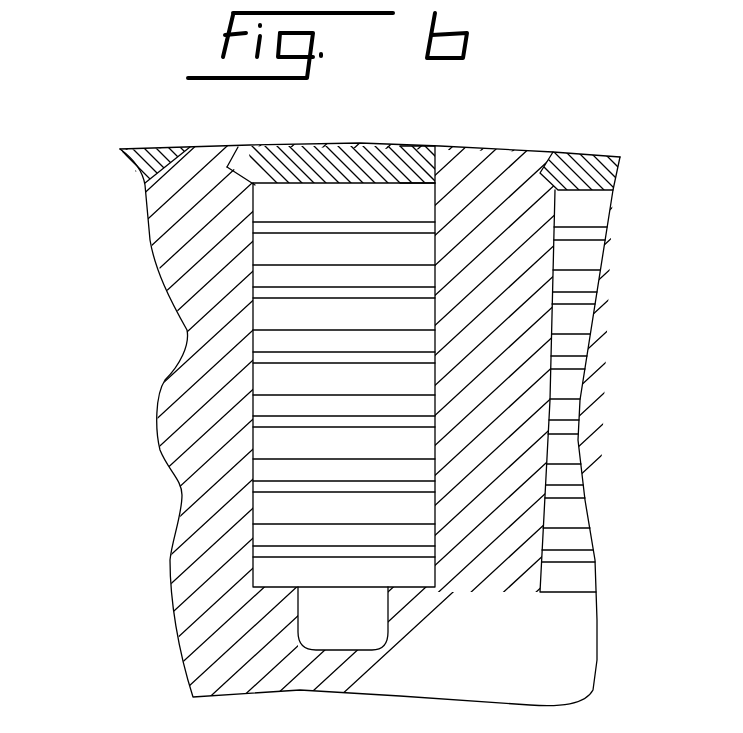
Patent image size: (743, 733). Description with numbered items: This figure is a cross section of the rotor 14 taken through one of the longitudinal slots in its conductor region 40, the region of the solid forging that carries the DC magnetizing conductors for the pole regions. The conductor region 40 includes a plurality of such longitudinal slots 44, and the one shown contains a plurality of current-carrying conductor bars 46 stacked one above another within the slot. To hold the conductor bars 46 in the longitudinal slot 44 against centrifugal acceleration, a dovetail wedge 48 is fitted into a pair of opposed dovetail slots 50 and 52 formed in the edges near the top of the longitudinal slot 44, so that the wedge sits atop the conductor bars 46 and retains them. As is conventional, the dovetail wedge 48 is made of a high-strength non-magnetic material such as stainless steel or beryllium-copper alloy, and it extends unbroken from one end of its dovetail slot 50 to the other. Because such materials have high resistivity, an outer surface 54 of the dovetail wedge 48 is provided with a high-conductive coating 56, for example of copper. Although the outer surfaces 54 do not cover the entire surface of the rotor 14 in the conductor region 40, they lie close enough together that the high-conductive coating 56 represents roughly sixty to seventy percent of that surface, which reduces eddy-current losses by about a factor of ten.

The rotor 14 is at (567, 655).
The conductor region 40 is at (528, 253).
The longitudinal slot 44 is at (437, 375).
The conductor bar 46 is at (278, 403).
The dovetail wedge 48 is at (418, 158).
The dovetail slot 50 is at (243, 155).
The dovetail slot 52 is at (458, 148).
The outer surface 54 is at (305, 143).
The high-conductive coating 56 is at (373, 143).